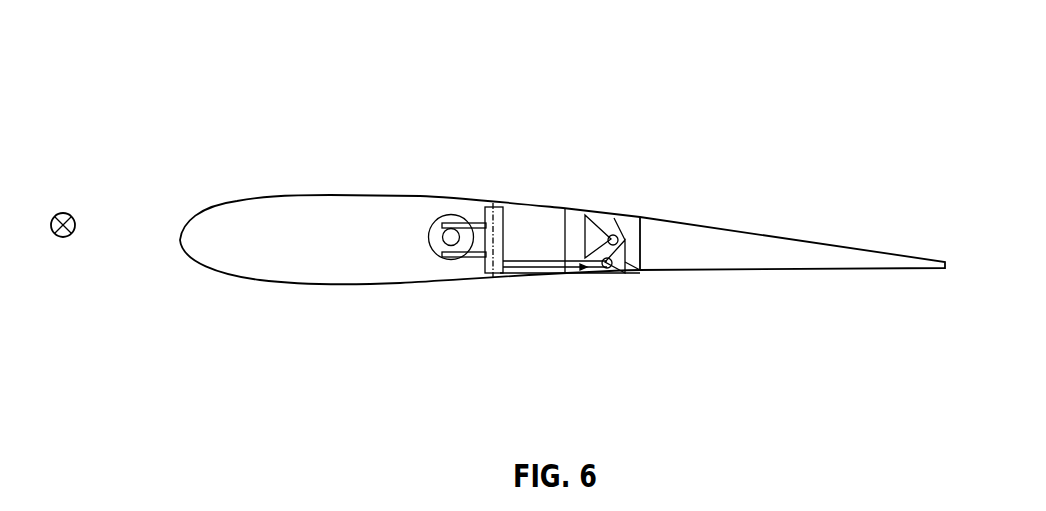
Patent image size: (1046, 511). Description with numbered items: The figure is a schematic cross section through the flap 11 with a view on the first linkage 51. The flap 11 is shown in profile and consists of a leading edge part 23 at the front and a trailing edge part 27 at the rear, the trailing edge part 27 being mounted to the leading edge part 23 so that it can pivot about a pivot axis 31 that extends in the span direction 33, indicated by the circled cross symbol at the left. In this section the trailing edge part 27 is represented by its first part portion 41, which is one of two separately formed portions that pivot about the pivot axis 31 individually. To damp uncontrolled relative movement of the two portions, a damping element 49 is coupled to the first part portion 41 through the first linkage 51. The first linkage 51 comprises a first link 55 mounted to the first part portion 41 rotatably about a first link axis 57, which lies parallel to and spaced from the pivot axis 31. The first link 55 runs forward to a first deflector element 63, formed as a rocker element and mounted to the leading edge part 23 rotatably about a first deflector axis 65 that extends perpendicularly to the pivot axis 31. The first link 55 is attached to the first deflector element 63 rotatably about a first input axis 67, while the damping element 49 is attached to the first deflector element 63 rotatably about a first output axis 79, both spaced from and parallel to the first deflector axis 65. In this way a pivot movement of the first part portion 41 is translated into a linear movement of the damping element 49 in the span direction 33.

The flap 11 is at (178, 140).
The leading edge part 23 is at (307, 241).
The trailing edge part 27 is at (753, 253).
The first part portion 41 is at (792, 243).
The pivot axis 31 is at (615, 236).
The span direction 33 is at (65, 213).
The damping element 49 is at (430, 236).
The first linkage 51 is at (465, 304).
The first link 55 is at (553, 268).
The first link axis 57 is at (608, 269).
The first deflector element 63 is at (476, 228).
The first deflector axis 65 is at (503, 215).
The first input axis 67 is at (503, 240).
The first output axis 79 is at (444, 238).